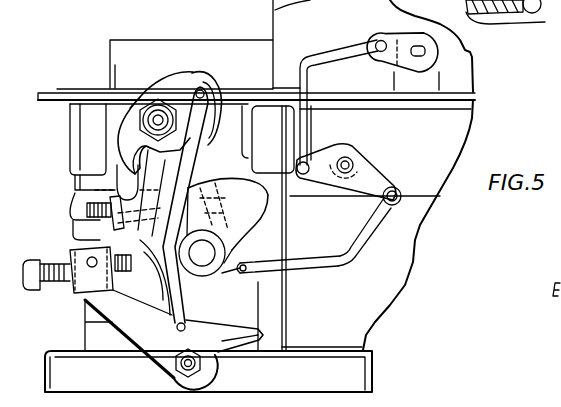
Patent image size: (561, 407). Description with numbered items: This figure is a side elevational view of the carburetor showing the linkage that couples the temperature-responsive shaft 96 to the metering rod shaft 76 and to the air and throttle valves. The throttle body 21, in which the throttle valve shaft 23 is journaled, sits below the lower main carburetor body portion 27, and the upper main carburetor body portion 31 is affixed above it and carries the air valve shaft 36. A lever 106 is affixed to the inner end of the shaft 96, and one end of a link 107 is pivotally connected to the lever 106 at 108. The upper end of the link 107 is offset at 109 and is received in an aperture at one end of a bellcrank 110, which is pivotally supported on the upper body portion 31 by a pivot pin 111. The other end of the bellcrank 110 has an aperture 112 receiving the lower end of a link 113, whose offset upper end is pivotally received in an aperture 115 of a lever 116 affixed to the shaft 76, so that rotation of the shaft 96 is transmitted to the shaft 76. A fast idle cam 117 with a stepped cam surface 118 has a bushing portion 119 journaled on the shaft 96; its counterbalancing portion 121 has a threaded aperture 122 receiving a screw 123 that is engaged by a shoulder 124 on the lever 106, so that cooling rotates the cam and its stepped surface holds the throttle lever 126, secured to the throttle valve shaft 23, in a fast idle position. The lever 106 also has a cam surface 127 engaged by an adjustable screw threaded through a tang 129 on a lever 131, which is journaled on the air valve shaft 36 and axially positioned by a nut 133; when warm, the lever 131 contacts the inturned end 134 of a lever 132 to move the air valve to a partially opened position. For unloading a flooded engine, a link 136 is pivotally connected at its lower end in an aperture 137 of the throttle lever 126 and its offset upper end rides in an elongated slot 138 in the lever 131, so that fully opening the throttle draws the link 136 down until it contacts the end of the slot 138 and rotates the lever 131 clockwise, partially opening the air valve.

The throttle body 21 is at (372, 358).
The throttle valve shaft 23 is at (180, 358).
The lower main carburetor body portion 27 is at (70, 213).
The upper main carburetor body portion 31 is at (113, 65).
The air valve shaft 36 is at (160, 118).
The shaft 76 is at (424, 50).
The shaft 96 is at (228, 272).
The lever 106 is at (243, 262).
The link 107 is at (354, 240).
The pivotal connection 108 is at (258, 276).
The offset end of link 109 is at (396, 188).
The bellcrank 110 is at (390, 150).
The pivot pin 111 is at (346, 158).
The aperture 112 is at (302, 176).
The link 113 is at (300, 64).
The aperture 115 is at (366, 50).
The lever 116 is at (400, 37).
The fast idle cam 117 is at (116, 242).
The stepped cam surface 118 is at (115, 276).
The bushing portion 119 is at (208, 262).
The counterbalancing portion 121 is at (247, 188).
The threaded aperture 122 is at (228, 196).
The screw 123 is at (213, 198).
The shoulder 124 is at (222, 210).
The throttle lever 126 is at (122, 330).
The cam surface 127 is at (114, 290).
The tang 129 is at (112, 197).
The lever 131 is at (138, 182).
The lever 132 is at (150, 97).
The nut 133 is at (175, 92).
The inturned end 134 is at (138, 172).
The link 136 is at (178, 292).
The aperture 137 is at (176, 330).
The elongated slot 138 is at (203, 83).